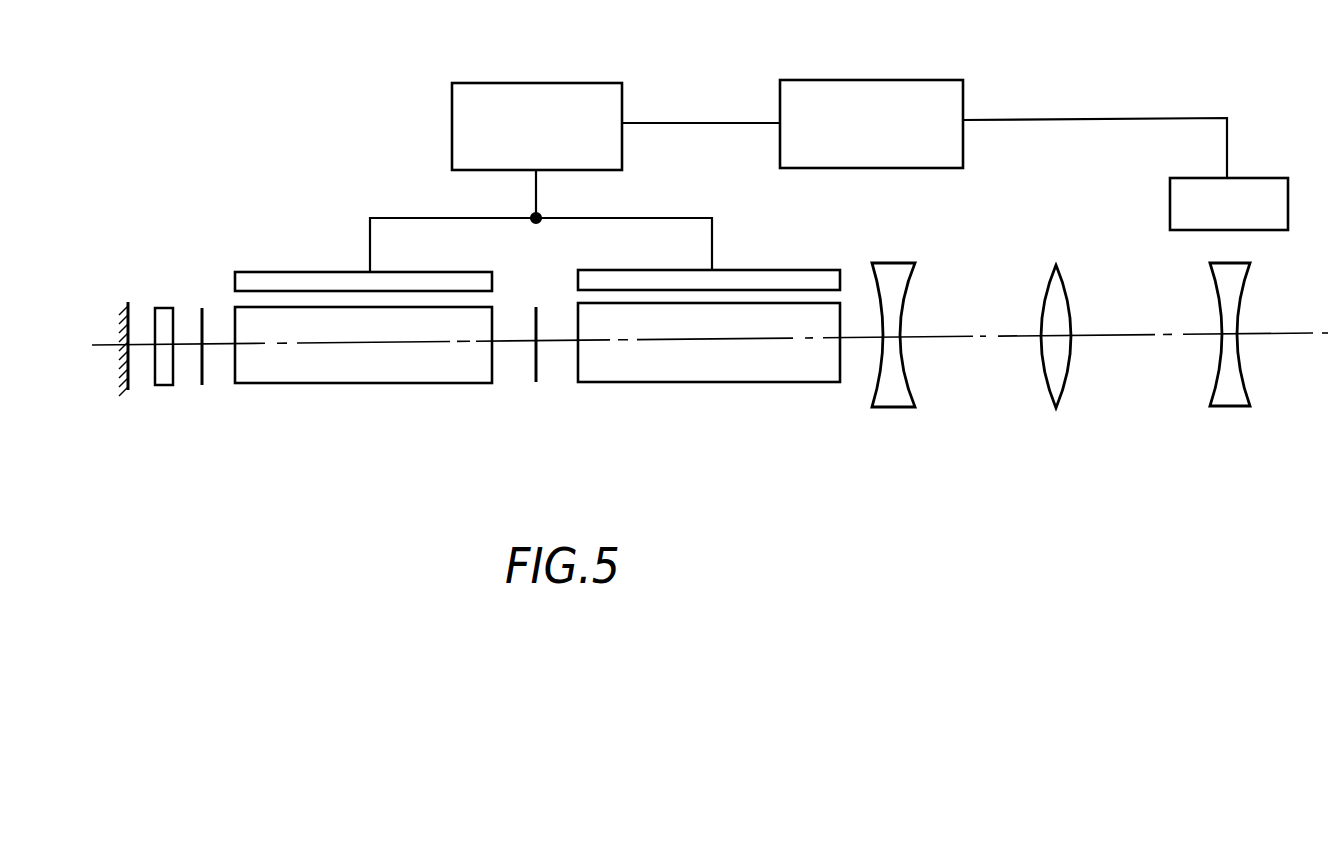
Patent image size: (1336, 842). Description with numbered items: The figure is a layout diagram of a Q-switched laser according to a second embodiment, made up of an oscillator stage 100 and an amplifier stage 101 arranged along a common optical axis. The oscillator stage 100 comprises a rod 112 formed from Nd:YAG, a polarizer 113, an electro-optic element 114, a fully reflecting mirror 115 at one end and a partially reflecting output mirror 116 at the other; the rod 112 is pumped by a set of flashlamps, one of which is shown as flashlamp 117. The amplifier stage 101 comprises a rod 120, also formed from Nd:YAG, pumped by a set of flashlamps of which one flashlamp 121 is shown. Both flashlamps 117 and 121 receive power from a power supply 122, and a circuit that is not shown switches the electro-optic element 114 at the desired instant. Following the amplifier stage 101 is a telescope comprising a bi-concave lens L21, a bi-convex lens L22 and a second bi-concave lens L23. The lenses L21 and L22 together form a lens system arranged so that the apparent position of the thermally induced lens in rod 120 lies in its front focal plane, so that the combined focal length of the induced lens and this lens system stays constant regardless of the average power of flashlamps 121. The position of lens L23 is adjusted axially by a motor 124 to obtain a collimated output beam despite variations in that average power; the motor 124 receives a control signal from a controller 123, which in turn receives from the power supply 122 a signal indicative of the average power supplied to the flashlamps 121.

The oscillator stage 100 is at (390, 394).
The amplifier stage 101 is at (624, 392).
The rod 112 is at (436, 365).
The polarizer 113 is at (203, 375).
The electro-optic element 114 is at (166, 375).
The fully reflecting mirror 115 is at (128, 388).
The partially reflecting output mirror 116 is at (535, 370).
The flashlamp 117 is at (313, 278).
The rod 120 is at (785, 360).
The flashlamp 121 is at (785, 276).
The power supply 122 is at (452, 138).
The controller 123 is at (780, 145).
The motor 124 is at (1170, 198).
The bi-concave lens L21 is at (905, 403).
The bi-convex lens L22 is at (1056, 392).
The bi-concave lens L23 is at (1228, 392).